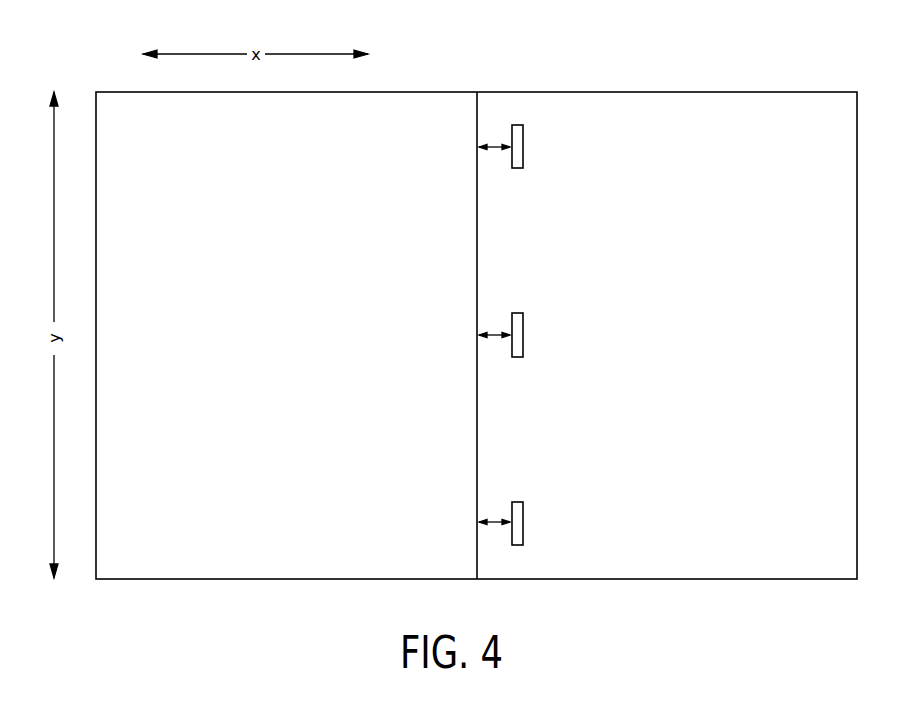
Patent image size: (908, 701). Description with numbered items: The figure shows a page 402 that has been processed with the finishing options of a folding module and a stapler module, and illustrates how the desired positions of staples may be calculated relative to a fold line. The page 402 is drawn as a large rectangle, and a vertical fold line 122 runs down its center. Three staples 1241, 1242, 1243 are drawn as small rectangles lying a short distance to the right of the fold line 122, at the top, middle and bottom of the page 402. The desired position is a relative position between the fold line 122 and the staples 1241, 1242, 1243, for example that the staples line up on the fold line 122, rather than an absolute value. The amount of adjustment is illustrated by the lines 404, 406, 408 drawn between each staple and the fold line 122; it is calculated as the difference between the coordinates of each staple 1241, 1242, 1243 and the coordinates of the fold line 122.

The page 402 is at (765, 92).
The fold line 122 is at (477, 248).
The staple 1241 is at (523, 147).
The staple 1242 is at (523, 336).
The staple 1243 is at (523, 523).
The line illustrating amount of adjustment 404 is at (494, 150).
The line illustrating amount of adjustment 406 is at (494, 338).
The line illustrating amount of adjustment 408 is at (494, 519).